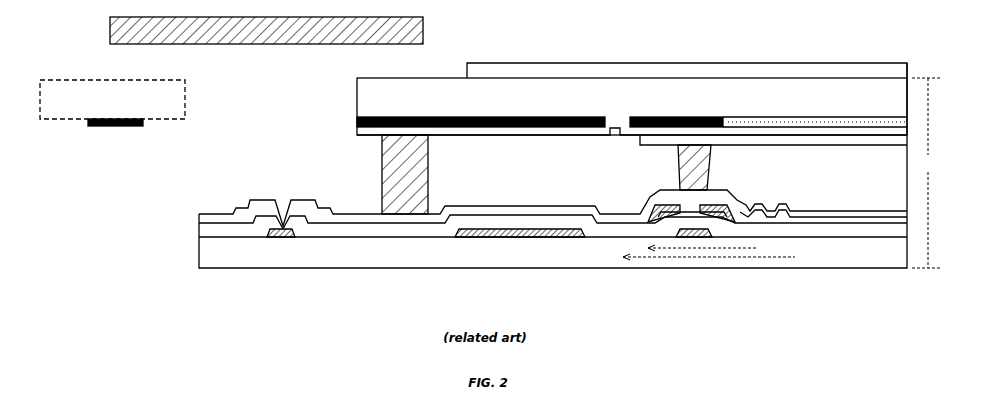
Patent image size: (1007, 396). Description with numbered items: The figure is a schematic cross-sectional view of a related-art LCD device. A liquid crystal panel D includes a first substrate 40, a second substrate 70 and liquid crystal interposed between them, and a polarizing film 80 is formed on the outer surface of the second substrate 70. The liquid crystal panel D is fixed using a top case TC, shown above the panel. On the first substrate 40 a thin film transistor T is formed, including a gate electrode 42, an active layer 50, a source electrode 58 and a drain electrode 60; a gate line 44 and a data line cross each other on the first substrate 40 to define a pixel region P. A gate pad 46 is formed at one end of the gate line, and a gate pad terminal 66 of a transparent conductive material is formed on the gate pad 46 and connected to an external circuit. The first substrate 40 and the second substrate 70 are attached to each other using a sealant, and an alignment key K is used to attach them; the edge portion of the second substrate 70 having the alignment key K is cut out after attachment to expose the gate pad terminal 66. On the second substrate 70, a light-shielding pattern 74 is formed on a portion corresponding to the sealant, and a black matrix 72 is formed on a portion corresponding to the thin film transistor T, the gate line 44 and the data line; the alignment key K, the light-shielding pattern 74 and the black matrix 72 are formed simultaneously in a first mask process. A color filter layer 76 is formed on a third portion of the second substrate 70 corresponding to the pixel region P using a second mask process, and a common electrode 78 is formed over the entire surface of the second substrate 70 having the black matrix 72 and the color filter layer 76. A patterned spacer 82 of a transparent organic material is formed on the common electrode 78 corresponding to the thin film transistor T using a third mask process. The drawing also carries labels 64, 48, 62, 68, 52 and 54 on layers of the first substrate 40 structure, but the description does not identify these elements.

The top case TC is at (424, 33).
The alignment key K is at (118, 128).
The second substrate 70 is at (186, 101).
The polarizing film 80 is at (858, 60).
The black matrix 72 is at (706, 116).
The color filter layer 76 is at (836, 125).
The common electrode 78 is at (881, 150).
The light-shielding pattern 74 is at (496, 137).
The column spacer 64 is at (381, 160).
The drain electrode 60 is at (710, 178).
The patterned spacer 82 is at (713, 170).
The first substrate 40 is at (553, 165).
The gate insulating layer 48 is at (406, 240).
The gate pad terminal 66 is at (512, 206).
The pixel electrode 62 is at (834, 215).
The contact hole 68 is at (303, 196).
The gate pad 46 is at (275, 240).
The gate line 44 is at (497, 239).
The gate electrode 42 is at (690, 238).
The active layer 50 is at (720, 216).
The source electrode 58 is at (664, 198).
The drain electrode 52 is at (650, 212).
The ohmic contact layer 54 is at (773, 236).
The thin film transistor T is at (703, 242).
The pixel region P is at (713, 258).
The liquid crystal panel D is at (927, 173).